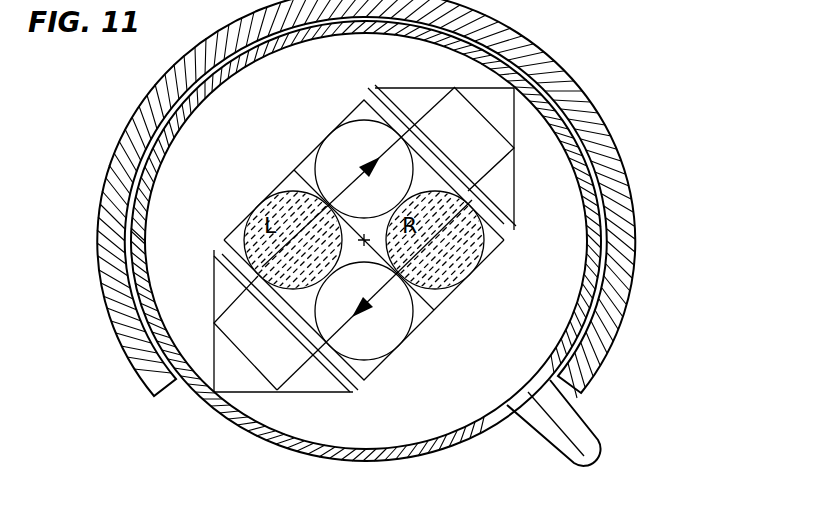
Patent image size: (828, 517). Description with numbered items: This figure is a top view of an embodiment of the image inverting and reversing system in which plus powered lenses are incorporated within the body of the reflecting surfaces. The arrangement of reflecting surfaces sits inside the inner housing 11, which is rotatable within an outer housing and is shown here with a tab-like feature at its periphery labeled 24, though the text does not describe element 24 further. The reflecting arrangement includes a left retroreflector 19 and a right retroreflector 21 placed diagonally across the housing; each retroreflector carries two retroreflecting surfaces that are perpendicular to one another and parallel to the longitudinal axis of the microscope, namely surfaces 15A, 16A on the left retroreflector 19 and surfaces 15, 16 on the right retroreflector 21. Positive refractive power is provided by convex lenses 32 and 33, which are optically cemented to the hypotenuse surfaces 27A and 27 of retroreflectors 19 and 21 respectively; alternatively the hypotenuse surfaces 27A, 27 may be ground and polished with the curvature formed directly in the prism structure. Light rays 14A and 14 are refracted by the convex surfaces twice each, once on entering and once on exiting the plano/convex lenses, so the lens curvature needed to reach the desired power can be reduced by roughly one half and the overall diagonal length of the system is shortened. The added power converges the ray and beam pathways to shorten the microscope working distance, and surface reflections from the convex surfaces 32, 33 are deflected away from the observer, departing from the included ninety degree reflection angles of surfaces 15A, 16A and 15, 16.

The inner housing 11 is at (400, 468).
The clamp band with tab 24 is at (392, 258).
The hypotenuse surface 27 is at (502, 204).
The hypotenuse surface 27A is at (230, 272).
The light ray 14 is at (376, 148).
The light ray 14A is at (362, 327).
The retroreflecting surface 15 is at (444, 75).
The retroreflecting surface 16 is at (529, 159).
The convex lens 33 is at (438, 150).
The right retroreflector 21 is at (486, 160).
The retroreflecting surface 16A is at (192, 321).
The retroreflecting surface 15A is at (283, 406).
The convex lens 32 is at (287, 328).
The left retroreflector 19 is at (276, 353).